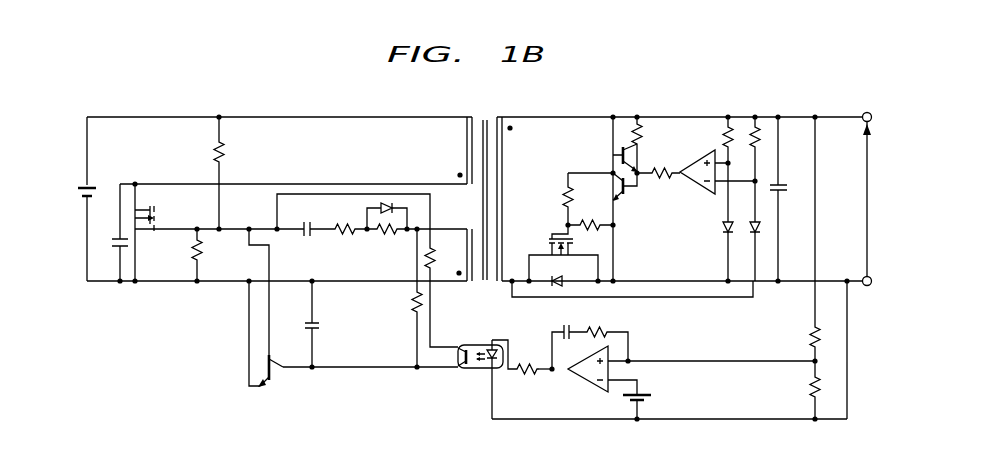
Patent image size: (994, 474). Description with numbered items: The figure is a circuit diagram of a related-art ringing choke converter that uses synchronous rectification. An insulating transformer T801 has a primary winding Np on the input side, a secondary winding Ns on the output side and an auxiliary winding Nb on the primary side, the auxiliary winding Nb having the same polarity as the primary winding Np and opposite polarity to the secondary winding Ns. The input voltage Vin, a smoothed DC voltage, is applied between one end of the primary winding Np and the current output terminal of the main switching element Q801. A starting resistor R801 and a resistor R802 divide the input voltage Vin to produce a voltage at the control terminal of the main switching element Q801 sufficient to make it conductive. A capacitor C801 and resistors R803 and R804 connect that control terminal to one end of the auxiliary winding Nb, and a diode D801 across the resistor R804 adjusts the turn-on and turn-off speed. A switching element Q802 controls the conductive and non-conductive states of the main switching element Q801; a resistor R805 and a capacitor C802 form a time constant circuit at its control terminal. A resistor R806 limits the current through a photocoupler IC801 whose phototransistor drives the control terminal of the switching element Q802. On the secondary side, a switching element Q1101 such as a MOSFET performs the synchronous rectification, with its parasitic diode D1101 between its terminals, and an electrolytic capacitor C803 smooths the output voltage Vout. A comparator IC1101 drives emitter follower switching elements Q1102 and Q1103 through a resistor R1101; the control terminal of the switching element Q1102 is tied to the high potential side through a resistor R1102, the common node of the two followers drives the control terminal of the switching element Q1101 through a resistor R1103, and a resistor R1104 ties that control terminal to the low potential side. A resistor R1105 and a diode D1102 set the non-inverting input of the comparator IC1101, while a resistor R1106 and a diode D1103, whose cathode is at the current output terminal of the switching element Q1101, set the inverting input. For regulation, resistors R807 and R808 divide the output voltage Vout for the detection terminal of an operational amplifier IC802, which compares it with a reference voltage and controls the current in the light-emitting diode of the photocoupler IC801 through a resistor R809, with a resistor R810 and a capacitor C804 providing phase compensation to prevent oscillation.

The insulating transformer T801 is at (484, 185).
The primary winding Np is at (451, 159).
The auxiliary winding Nb is at (451, 254).
The secondary winding Ns is at (517, 141).
The input voltage Vin is at (78, 181).
The capacitor C804 is at (118, 250).
The main switching element Q801 is at (167, 232).
The starting resistor R801 is at (197, 173).
The resistor R802 is at (173, 255).
The capacitor C801 is at (307, 242).
The resistor R803 is at (338, 216).
The resistor R804 is at (387, 243).
The diode D801 is at (388, 203).
The resistor R805 is at (392, 298).
The resistor R806 is at (434, 264).
The capacitor C802 is at (334, 324).
The switching element Q802 is at (283, 314).
The photocoupler IC801 is at (475, 379).
The resistor R809 is at (526, 384).
The operational amplifier IC802 is at (599, 382).
The resistor R810 is at (607, 332).
The parasitic diode D1101 is at (550, 284).
The switching element Q1101 is at (554, 247).
The resistor R1104 is at (600, 229).
The resistor R1103 is at (540, 199).
The emitter follower switching element Q1103 is at (618, 193).
The emitter follower switching element Q1102 is at (598, 155).
The resistor R1102 is at (662, 145).
The resistor R1101 is at (665, 160).
The comparator IC1101 is at (704, 181).
The resistor R1105 is at (710, 155).
The diode D1102 is at (701, 248).
The resistor R1106 is at (773, 155).
The diode D1103 is at (761, 234).
The electrolytic capacitor C803 is at (787, 184).
The resistor R807 is at (791, 239).
The resistor R808 is at (791, 390).
The output voltage Vout is at (850, 199).